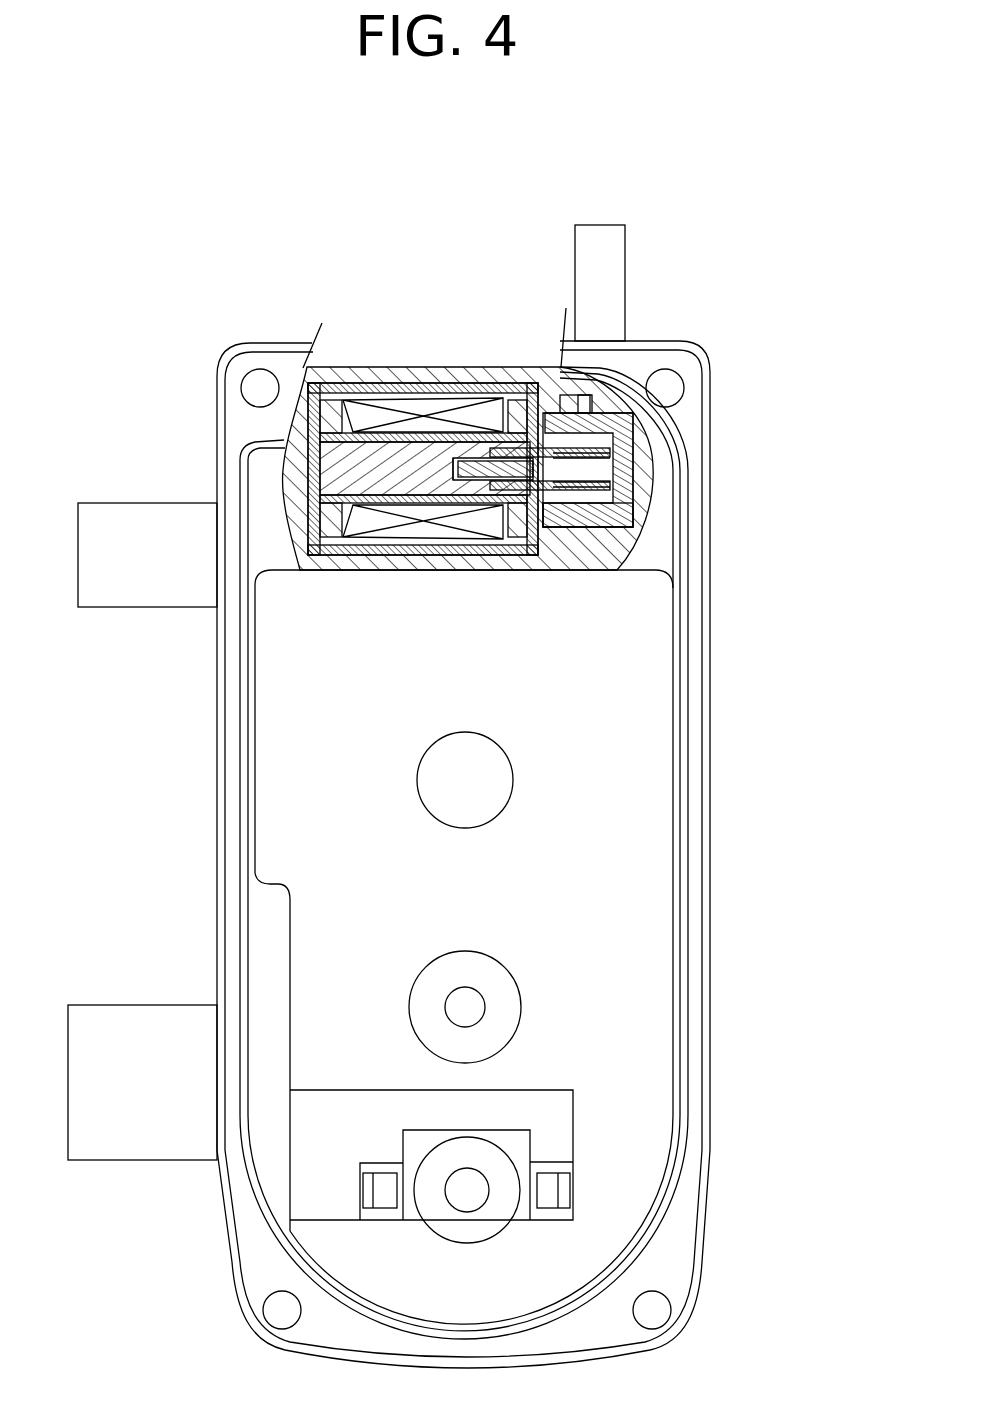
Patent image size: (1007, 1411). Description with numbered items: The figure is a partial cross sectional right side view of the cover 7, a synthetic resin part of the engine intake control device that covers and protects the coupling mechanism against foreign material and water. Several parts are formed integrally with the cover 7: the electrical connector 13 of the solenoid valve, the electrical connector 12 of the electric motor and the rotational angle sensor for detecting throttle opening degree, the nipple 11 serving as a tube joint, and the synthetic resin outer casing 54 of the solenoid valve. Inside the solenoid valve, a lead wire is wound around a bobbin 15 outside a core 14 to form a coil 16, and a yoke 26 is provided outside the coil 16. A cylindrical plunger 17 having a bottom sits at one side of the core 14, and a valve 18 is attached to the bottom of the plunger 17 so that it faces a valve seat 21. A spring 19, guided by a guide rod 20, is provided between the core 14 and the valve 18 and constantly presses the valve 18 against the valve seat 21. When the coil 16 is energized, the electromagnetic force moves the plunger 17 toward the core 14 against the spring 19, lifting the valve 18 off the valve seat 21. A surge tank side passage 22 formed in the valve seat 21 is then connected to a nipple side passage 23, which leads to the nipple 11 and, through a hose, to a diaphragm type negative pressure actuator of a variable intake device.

The cover 7 is at (215, 745).
The nipple 11 is at (605, 288).
The electrical connector 12 is at (143, 1127).
The electrical connector 13 is at (155, 537).
The core 14 is at (347, 373).
The bobbin 15 is at (330, 558).
The coil 16 is at (413, 403).
The plunger 17 is at (505, 395).
The valve 18 is at (575, 540).
The spring 19 is at (512, 540).
The guide rod 20 is at (478, 545).
The valve seat 21 is at (630, 500).
The surge tank side passage 22 is at (597, 467).
The nipple side passage 23 is at (593, 425).
The yoke 26 is at (445, 398).
The outer casing 54 is at (472, 400).